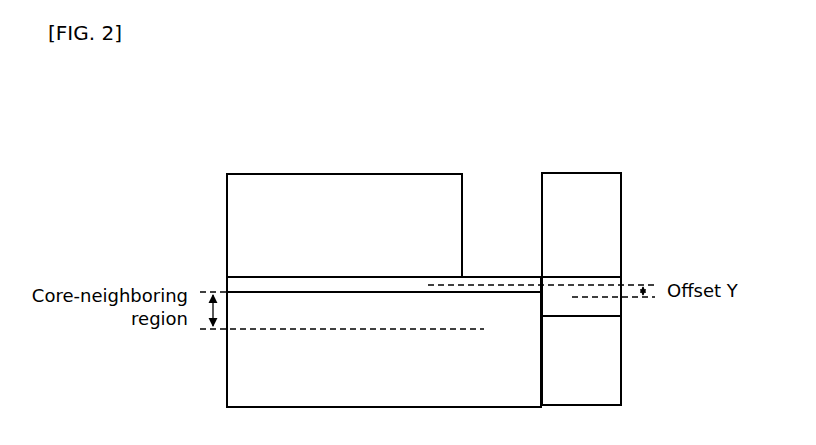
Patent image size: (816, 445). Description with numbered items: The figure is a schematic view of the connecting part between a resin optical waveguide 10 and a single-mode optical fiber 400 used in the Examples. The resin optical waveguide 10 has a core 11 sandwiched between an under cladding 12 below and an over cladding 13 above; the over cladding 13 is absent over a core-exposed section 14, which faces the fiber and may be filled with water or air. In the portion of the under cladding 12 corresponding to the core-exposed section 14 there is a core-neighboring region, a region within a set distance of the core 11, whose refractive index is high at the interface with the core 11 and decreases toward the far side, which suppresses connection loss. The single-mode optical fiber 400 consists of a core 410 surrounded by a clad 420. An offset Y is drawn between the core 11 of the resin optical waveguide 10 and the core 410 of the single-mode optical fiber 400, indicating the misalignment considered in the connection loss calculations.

The resin optical waveguide 10 is at (325, 148).
The core 11 is at (233, 283).
The under cladding 12 is at (237, 372).
The over cladding 13 is at (418, 187).
The core-exposed section 14 is at (499, 260).
The single-mode optical fiber 400 is at (651, 150).
The core 410 is at (608, 308).
The clad 420 is at (608, 225).